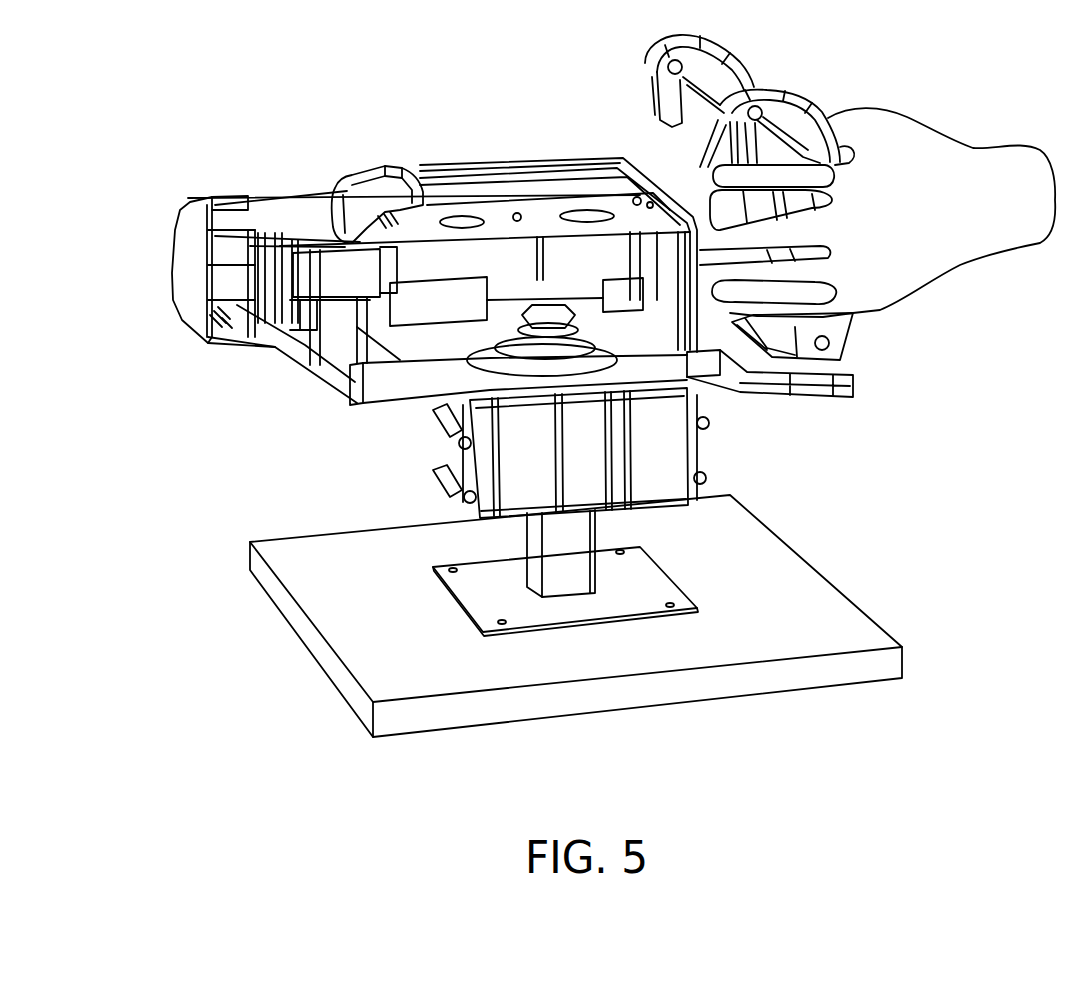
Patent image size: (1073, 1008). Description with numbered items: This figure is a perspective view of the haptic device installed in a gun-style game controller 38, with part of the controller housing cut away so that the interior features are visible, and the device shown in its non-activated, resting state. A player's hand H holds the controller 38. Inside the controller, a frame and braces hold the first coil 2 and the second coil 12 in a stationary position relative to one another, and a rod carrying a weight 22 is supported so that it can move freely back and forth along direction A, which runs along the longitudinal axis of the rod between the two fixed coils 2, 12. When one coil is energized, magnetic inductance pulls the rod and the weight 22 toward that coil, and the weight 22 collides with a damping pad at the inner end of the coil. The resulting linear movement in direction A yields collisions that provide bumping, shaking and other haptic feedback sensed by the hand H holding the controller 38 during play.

The first coil 2 is at (332, 277).
The second coil 12 is at (572, 255).
The weight 22 is at (437, 260).
The controller 38 is at (795, 445).
The hand H is at (933, 162).
The direction A is at (583, 112).